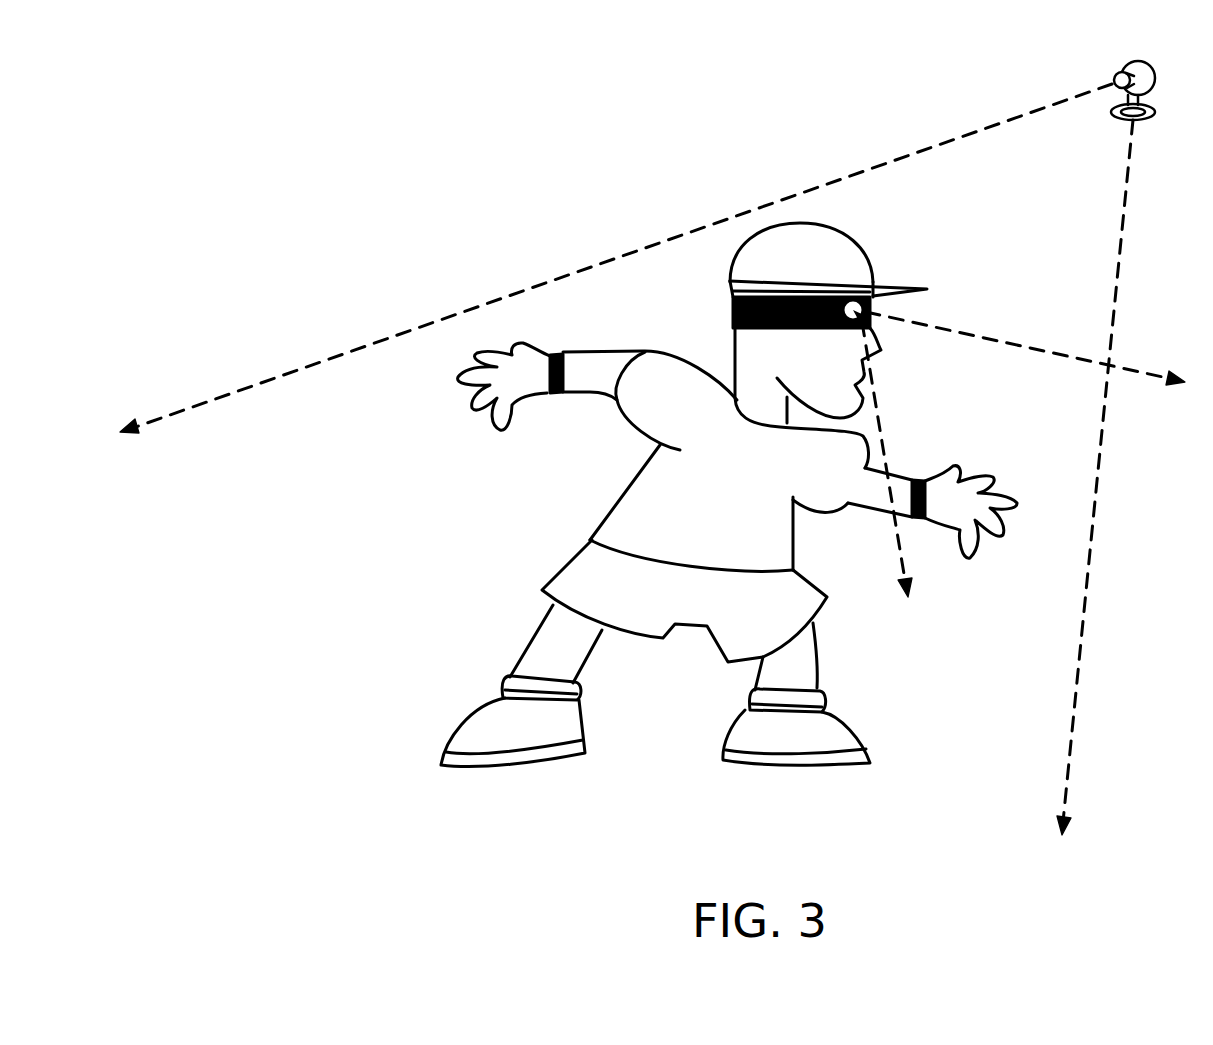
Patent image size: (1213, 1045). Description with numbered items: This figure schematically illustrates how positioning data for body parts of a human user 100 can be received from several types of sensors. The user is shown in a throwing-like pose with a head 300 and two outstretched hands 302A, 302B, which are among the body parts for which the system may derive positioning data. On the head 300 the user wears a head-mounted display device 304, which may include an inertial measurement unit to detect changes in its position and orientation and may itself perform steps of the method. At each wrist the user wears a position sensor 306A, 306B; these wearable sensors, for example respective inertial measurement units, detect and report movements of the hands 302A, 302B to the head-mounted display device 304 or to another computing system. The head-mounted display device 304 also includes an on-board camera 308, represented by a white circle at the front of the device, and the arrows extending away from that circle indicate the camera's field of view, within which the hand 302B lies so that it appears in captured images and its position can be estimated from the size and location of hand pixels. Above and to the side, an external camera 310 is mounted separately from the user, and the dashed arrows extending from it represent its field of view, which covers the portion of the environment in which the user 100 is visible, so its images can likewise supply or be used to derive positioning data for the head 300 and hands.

The human user 100 is at (662, 338).
The head 300 is at (836, 236).
The hand 302A is at (484, 420).
The hand 302B is at (972, 472).
The head-mounted display device 304 is at (733, 312).
The position sensor 306A is at (557, 352).
The position sensor 306B is at (922, 480).
The on-board camera 308 is at (892, 306).
The external camera 310 is at (1131, 62).